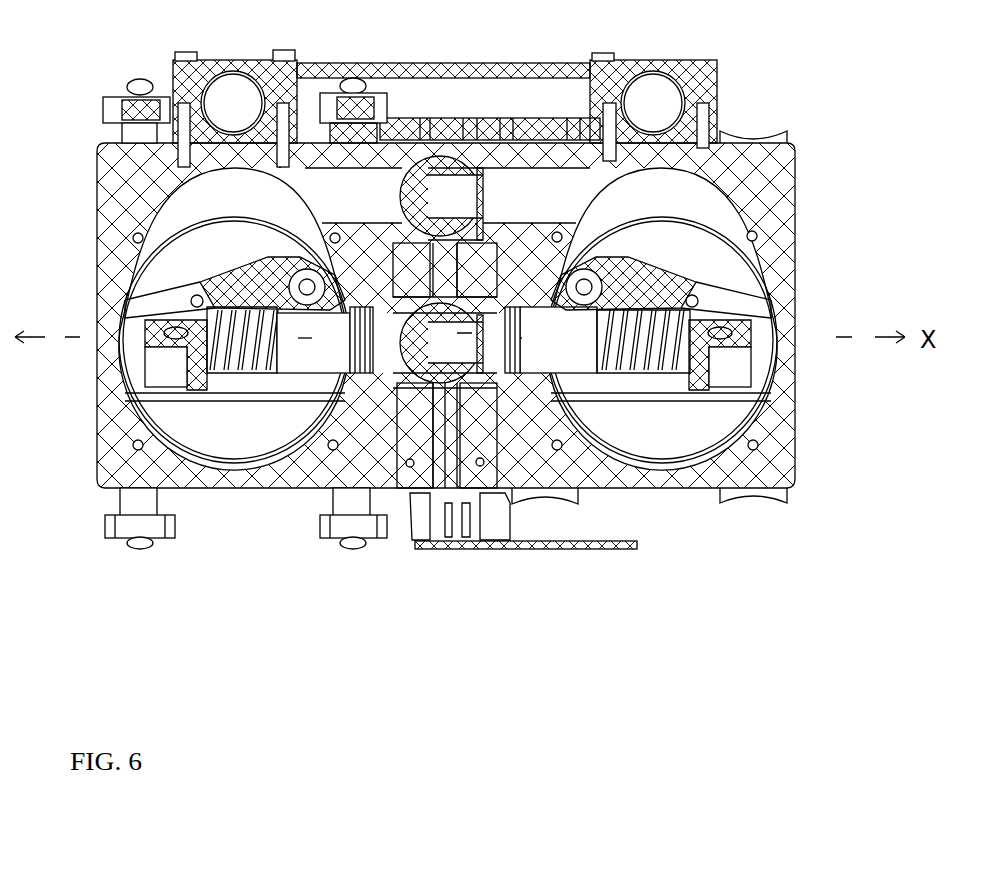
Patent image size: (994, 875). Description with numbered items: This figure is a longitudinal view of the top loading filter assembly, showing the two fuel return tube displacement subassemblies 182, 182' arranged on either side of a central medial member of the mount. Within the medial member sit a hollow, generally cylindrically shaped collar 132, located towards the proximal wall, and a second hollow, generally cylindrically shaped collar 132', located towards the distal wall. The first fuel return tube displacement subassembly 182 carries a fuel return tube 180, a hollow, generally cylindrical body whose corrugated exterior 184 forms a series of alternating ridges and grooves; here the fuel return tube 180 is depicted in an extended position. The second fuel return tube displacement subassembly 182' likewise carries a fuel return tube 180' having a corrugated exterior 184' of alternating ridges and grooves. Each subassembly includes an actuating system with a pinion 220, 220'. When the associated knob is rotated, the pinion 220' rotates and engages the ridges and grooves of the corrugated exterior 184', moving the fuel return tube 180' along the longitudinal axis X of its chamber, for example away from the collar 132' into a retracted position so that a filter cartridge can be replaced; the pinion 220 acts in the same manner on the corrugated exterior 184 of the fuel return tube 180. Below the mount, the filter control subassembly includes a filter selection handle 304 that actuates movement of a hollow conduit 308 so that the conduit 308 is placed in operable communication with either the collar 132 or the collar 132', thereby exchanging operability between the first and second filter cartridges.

The first fuel return tube displacement subassembly 182 is at (412, 306).
The second fuel return tube displacement subassembly 182' is at (824, 448).
The corrugated exterior 184 is at (183, 287).
The corrugated exterior 184' is at (660, 395).
The pinion 220 is at (348, 153).
The pinion 220' is at (737, 235).
The fuel return tube 180 is at (259, 443).
The fuel return tube 180' is at (628, 432).
The collar 132 is at (388, 377).
The collar 132' is at (463, 433).
The hollow conduit 308 is at (430, 357).
The filter selection handle 304 is at (592, 562).